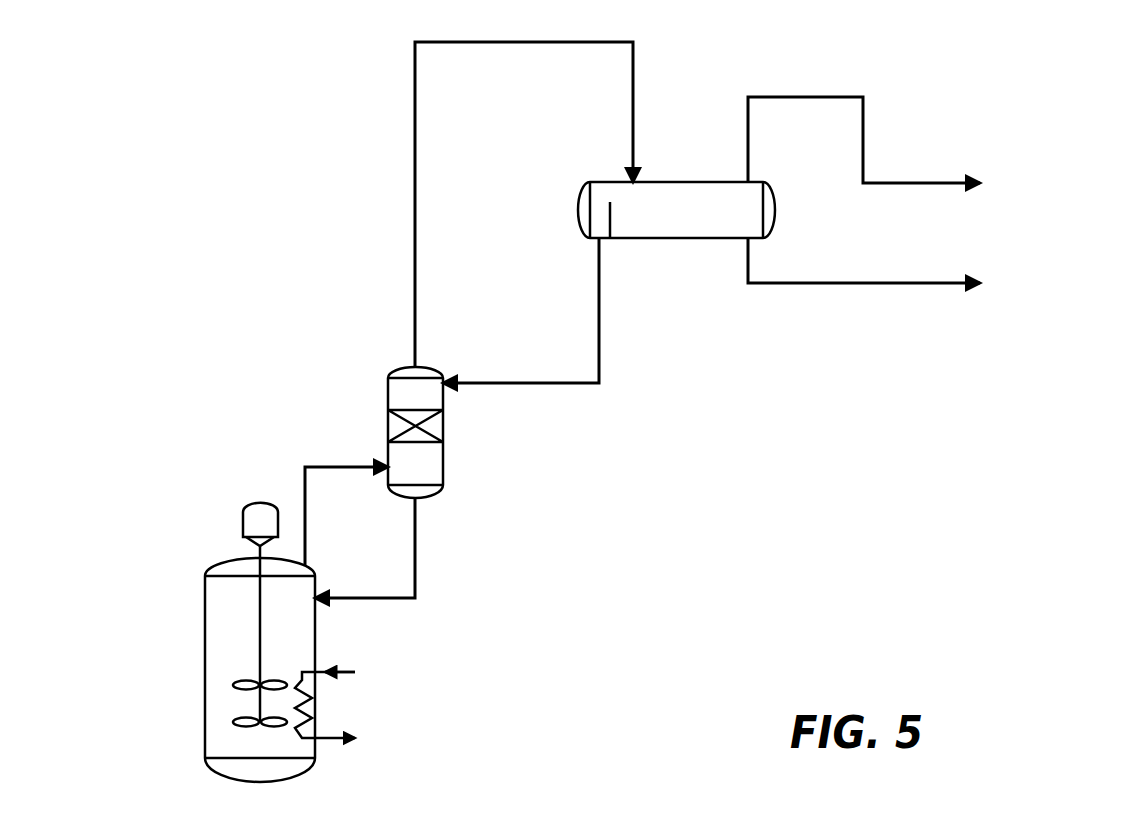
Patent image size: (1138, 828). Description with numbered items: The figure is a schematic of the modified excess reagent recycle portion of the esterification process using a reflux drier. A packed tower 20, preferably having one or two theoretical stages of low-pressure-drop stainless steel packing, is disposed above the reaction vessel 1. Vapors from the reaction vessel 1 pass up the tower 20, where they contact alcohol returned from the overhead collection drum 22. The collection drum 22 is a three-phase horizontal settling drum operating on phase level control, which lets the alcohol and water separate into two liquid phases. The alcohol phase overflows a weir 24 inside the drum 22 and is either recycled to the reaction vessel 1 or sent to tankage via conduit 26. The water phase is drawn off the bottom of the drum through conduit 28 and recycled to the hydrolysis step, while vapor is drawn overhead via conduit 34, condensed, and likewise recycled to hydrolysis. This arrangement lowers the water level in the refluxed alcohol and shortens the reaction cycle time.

The reaction vessel 1 is at (205, 602).
The packed tower 20 is at (447, 464).
The overhead collection drum 22 is at (577, 212).
The weir 24 is at (612, 221).
The conduit 26 is at (601, 318).
The conduit 28 is at (820, 283).
The conduit 34 is at (919, 182).